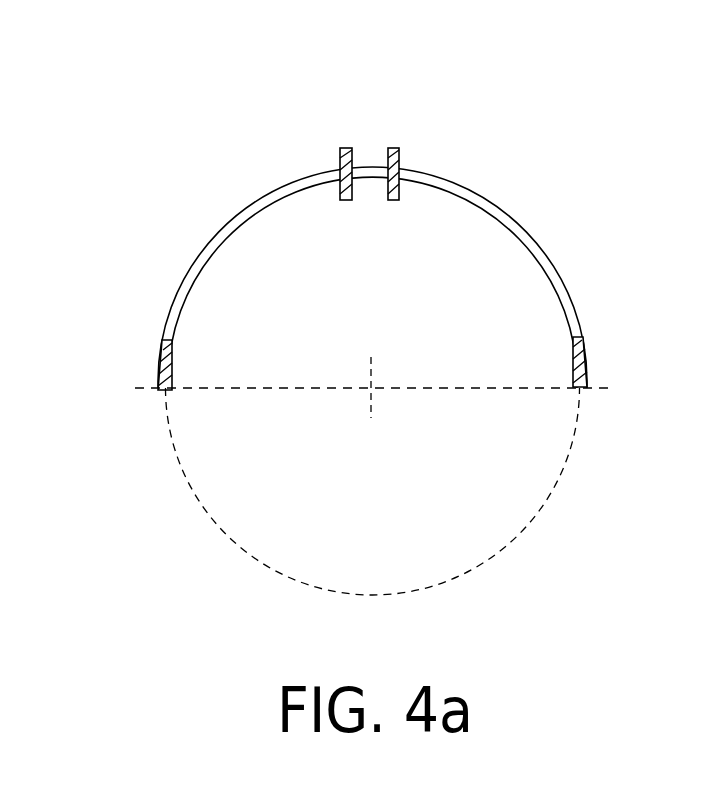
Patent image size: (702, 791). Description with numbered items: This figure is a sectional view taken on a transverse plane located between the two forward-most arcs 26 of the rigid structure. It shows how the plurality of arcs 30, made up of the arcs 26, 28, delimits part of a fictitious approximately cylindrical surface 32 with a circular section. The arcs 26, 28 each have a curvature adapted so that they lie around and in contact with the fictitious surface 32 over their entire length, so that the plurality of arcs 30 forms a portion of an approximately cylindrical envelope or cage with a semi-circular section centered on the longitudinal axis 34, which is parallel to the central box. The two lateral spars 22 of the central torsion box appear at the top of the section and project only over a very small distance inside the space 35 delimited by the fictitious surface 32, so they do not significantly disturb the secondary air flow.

The lateral spars 22 is at (397, 148).
The arc 26 is at (548, 268).
The arc 28 is at (160, 364).
The plurality of arcs 30 is at (402, 223).
The fictitious approximately cylindrical surface 32 is at (533, 515).
The longitudinal axis 34 is at (371, 388).
The space 35 is at (345, 311).